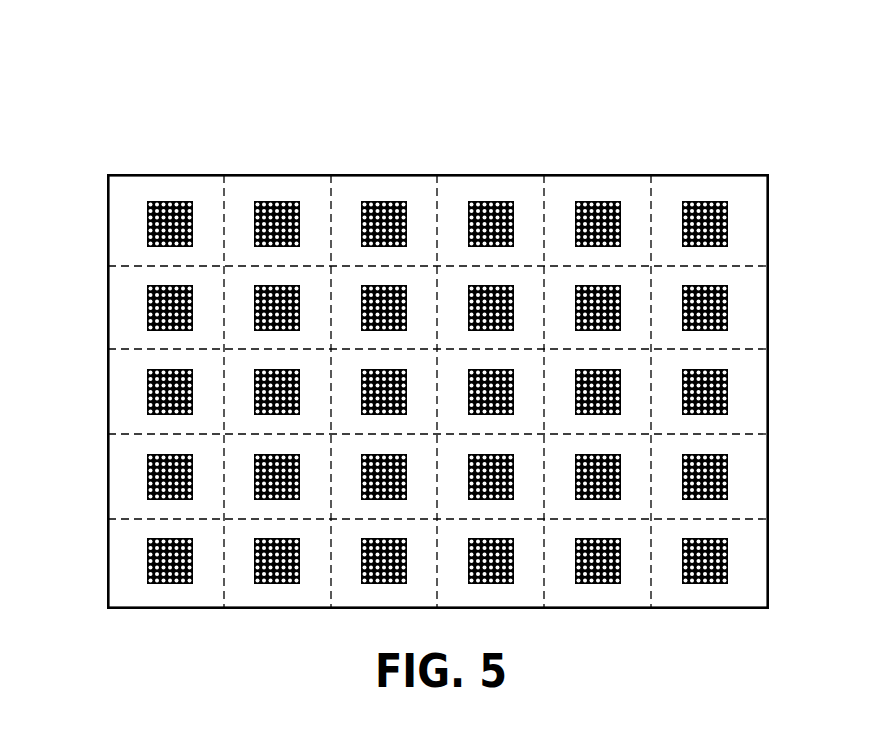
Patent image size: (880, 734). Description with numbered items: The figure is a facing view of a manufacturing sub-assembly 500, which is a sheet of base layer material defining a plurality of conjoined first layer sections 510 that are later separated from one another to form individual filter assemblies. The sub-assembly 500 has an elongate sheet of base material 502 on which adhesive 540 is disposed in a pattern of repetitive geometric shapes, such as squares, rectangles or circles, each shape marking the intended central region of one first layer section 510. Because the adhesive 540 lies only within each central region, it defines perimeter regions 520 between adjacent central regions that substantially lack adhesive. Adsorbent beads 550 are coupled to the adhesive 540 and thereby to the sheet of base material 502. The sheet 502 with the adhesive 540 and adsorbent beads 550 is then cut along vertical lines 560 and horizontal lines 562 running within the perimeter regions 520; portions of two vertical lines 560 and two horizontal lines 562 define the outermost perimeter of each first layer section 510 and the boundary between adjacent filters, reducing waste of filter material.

The manufacturing sub-assembly 500 is at (593, 100).
The sheet of base material 502 is at (146, 187).
The first layer section 510 is at (753, 318).
The perimeter region 520 is at (756, 232).
The adhesive 540 is at (145, 393).
The adsorbent beads 550 is at (147, 318).
The vertical lines 560 is at (650, 205).
The horizontal lines 562 is at (753, 520).